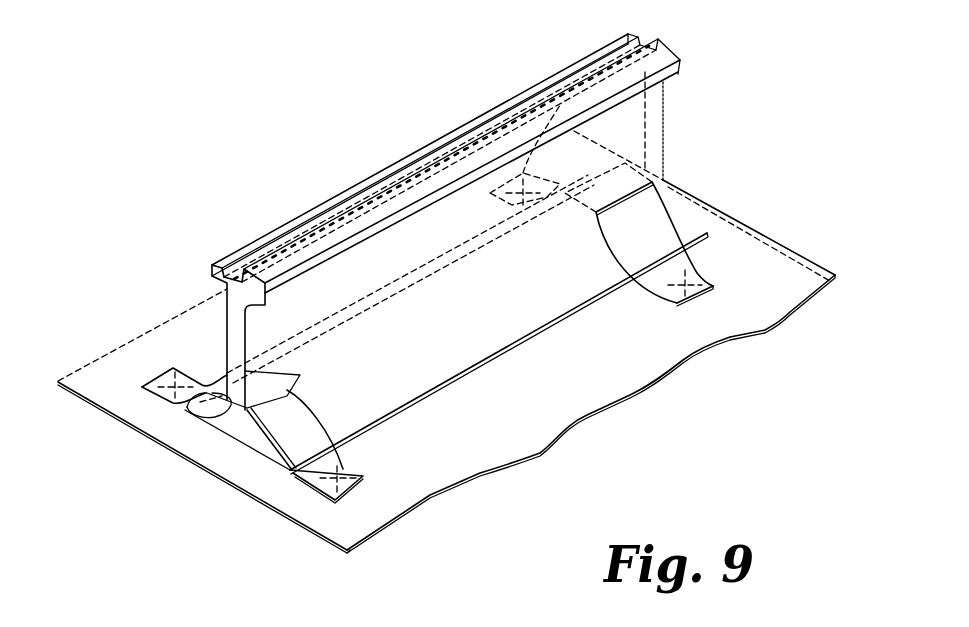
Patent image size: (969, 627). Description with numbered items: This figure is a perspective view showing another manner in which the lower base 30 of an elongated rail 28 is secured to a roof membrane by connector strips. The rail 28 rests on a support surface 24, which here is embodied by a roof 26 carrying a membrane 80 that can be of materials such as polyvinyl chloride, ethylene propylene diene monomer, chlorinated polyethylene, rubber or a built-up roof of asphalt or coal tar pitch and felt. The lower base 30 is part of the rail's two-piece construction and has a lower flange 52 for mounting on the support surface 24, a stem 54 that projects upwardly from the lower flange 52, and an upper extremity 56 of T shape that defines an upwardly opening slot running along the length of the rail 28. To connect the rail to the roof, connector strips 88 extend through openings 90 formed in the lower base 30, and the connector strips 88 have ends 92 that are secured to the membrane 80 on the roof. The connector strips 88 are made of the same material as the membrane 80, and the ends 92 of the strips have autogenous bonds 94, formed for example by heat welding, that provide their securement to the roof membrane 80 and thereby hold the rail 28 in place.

The support surface 24 is at (470, 493).
The roof 26 is at (407, 513).
The elongated rail 28 is at (209, 328).
The lower base 30 is at (400, 222).
The lower flange 52 is at (477, 368).
The stem 54 is at (240, 338).
The upper extremity 56 is at (323, 277).
The membrane 80 is at (637, 358).
The connector strip 88 is at (285, 392).
The opening 90 is at (287, 420).
The end 92 is at (173, 387).
The autogenous bond 94 is at (168, 367).